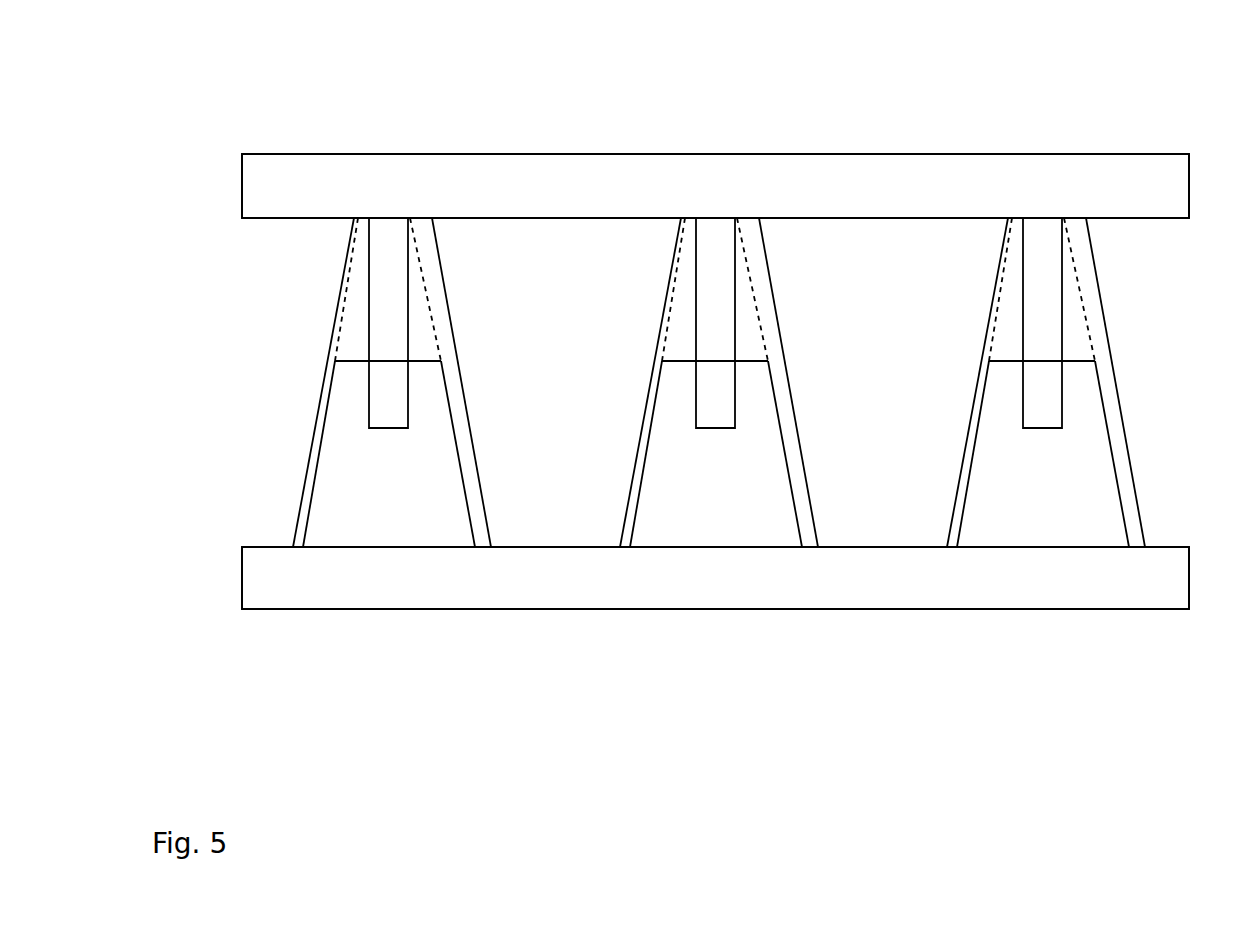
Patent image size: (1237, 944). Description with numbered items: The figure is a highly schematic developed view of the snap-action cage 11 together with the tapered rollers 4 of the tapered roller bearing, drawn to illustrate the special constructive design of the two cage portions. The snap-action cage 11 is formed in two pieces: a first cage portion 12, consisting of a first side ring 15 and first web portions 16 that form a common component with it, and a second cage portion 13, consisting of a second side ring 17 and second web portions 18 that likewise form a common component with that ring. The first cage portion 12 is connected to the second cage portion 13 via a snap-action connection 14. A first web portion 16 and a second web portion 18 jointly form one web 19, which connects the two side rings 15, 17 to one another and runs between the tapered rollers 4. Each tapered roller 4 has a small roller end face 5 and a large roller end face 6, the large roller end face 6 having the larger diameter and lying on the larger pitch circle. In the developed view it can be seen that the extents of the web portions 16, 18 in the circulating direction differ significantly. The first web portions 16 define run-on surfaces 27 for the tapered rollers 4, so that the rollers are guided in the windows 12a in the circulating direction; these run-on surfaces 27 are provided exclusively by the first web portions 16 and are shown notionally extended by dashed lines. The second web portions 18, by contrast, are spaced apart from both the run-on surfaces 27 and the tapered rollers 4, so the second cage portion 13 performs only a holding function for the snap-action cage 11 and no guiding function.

The tapered rollers 4 is at (568, 381).
The small roller end face 5 is at (553, 547).
The large roller end face 6 is at (272, 201).
The snap-action cage 11 is at (169, 652).
The first cage portion 12 is at (242, 578).
The windows 12a is at (217, 116).
The second cage portion 13 is at (242, 187).
The snap-action connection 14 is at (377, 407).
The first side ring 15 is at (708, 595).
The first web portions 16 is at (382, 521).
The second side ring 17 is at (708, 198).
The second web portions 18 is at (373, 282).
The web 19 is at (428, 323).
The run-on surfaces 27 is at (338, 340).